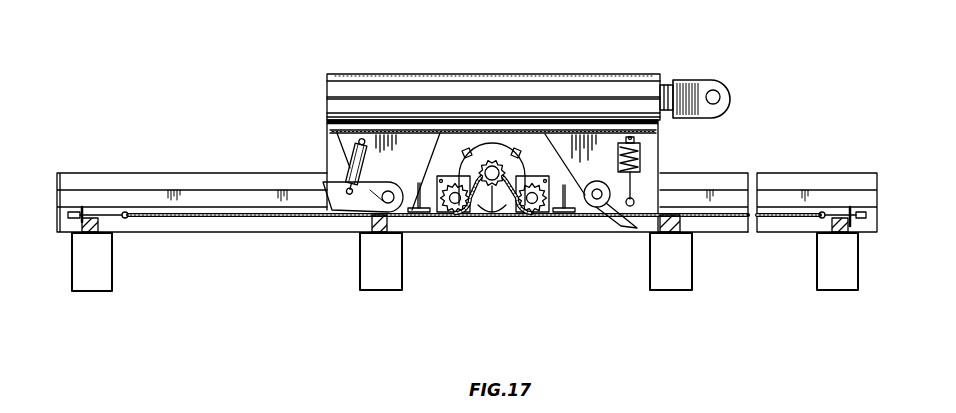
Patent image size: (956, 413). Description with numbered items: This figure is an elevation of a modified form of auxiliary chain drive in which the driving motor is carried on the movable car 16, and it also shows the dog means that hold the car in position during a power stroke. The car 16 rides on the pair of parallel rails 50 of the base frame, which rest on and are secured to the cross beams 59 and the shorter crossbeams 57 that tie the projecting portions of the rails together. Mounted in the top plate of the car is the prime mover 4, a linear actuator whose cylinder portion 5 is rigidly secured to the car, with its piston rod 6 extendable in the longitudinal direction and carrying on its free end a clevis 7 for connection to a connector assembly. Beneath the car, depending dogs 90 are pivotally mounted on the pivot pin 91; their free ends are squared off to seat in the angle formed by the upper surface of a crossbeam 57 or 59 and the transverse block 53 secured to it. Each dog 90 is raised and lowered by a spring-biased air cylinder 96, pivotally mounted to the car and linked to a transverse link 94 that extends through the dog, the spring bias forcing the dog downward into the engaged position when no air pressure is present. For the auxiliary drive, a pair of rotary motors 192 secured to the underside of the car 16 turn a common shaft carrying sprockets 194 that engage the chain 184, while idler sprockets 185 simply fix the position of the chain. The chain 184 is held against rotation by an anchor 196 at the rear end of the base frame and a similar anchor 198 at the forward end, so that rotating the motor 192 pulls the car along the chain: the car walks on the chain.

The prime mover 4 is at (440, 62).
The cylinder portion 5 is at (522, 80).
The piston rod 6 is at (669, 84).
The clevis 7 is at (708, 79).
The movable car 16 is at (306, 153).
The rails 50 is at (76, 173).
The transverse block 53 is at (388, 226).
The crossbeams 57 is at (113, 274).
The cross beams 59 is at (358, 287).
The dog 90 is at (327, 218).
The pivot pin 91 is at (364, 218).
The transverse link 94 is at (370, 188).
The spring-biased air cylinder 96 is at (368, 156).
The chain 184 is at (230, 217).
The idler sprocket 185 is at (451, 216).
The rotary motor 192 is at (517, 220).
The sprocket 194 is at (490, 214).
The anchor 196 is at (72, 228).
The anchor 198 is at (866, 238).